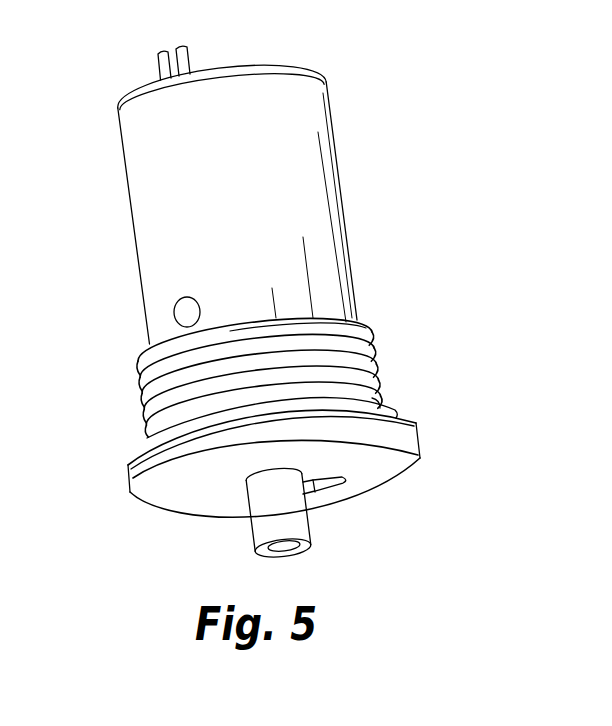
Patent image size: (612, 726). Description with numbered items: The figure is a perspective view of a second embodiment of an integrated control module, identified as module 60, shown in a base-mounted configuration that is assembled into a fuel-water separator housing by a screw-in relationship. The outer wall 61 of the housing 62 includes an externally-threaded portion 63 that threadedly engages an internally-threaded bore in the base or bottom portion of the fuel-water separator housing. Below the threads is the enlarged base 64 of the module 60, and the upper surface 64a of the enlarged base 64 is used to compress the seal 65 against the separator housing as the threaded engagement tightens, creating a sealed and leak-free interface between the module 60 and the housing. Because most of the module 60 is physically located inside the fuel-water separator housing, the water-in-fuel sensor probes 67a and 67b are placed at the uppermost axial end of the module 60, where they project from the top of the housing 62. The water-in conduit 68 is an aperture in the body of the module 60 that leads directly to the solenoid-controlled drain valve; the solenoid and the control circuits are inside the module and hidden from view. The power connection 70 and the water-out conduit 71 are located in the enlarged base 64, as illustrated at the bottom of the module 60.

The integrated control module 60 is at (260, 293).
The outer wall 61 is at (369, 357).
The housing 62 is at (182, 156).
The externally-threaded portion 63 is at (250, 372).
The enlarged base 64 is at (262, 458).
The upper surface 64a is at (172, 434).
The seal 65 is at (375, 407).
The water-in-fuel sensor probe 67a is at (187, 56).
The water-in-fuel sensor probe 67b is at (158, 62).
The water-in conduit 68 is at (185, 312).
The power connection 70 is at (313, 488).
The water-out conduit 71 is at (266, 524).